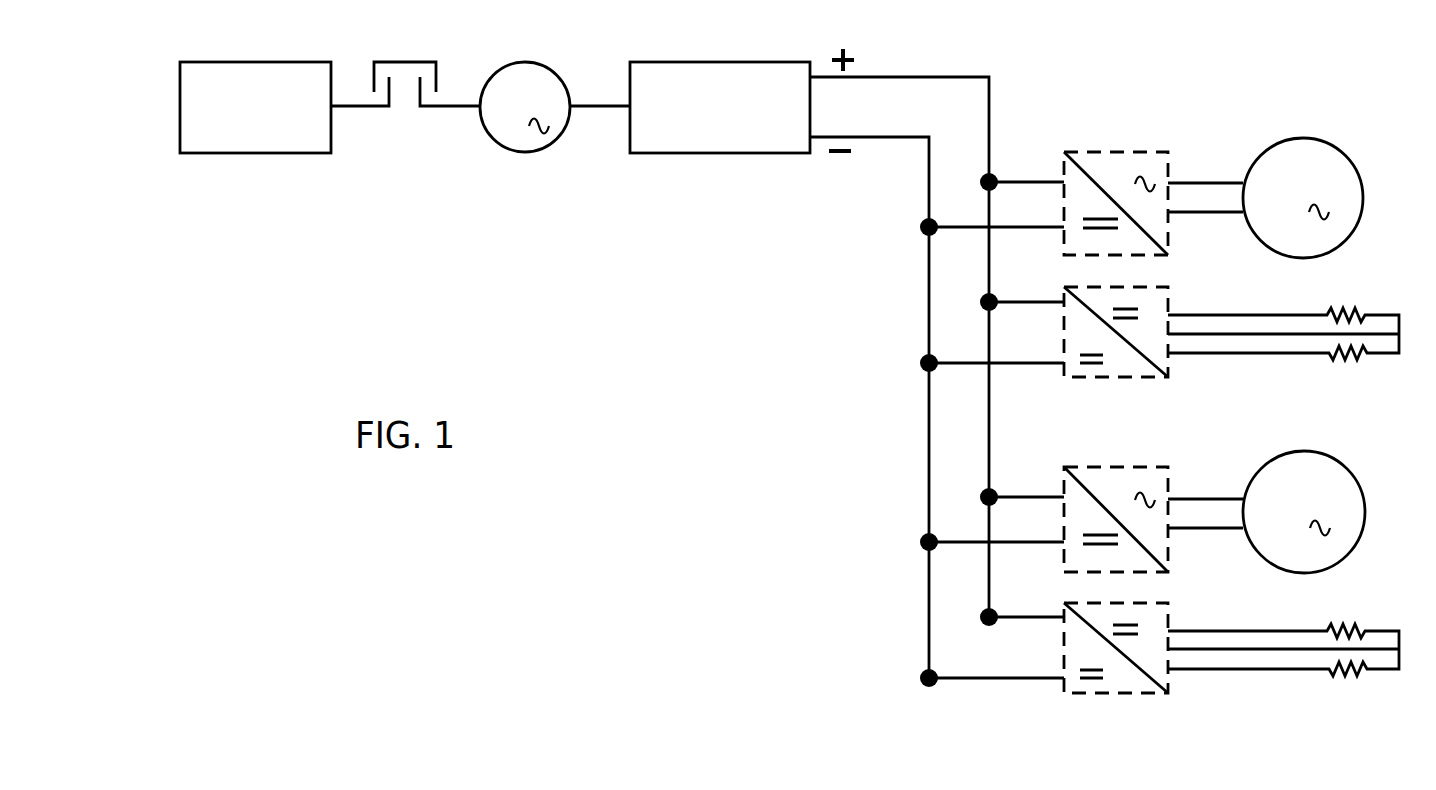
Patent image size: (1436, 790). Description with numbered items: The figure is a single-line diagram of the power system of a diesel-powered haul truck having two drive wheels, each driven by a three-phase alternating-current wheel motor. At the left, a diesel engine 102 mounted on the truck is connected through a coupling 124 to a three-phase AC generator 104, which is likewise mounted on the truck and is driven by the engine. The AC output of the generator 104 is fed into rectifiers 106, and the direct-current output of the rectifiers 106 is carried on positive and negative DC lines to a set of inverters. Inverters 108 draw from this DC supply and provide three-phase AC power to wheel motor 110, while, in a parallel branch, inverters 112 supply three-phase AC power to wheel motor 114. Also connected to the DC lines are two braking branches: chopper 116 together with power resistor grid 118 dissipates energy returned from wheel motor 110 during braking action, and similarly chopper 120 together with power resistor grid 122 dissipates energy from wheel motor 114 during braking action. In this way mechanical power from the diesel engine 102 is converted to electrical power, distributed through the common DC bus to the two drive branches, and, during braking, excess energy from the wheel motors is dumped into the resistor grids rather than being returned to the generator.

The diesel engine 102 is at (255, 92).
The generator 104 is at (555, 92).
The rectifiers 106 is at (720, 92).
The inverters 108 is at (1153, 190).
The wheel motor 110 is at (1303, 184).
The inverters 112 is at (1153, 506).
The wheel motor 114 is at (1304, 499).
The chopper 116 is at (1116, 347).
The power resistor grid 118 is at (1283, 352).
The chopper 120 is at (1116, 663).
The power resistor grid 122 is at (1283, 668).
The coupling 124 is at (405, 105).